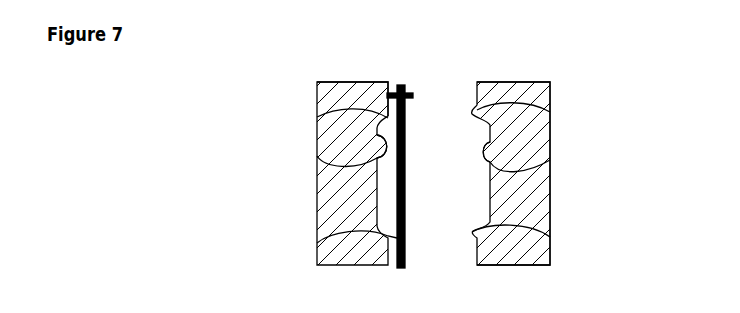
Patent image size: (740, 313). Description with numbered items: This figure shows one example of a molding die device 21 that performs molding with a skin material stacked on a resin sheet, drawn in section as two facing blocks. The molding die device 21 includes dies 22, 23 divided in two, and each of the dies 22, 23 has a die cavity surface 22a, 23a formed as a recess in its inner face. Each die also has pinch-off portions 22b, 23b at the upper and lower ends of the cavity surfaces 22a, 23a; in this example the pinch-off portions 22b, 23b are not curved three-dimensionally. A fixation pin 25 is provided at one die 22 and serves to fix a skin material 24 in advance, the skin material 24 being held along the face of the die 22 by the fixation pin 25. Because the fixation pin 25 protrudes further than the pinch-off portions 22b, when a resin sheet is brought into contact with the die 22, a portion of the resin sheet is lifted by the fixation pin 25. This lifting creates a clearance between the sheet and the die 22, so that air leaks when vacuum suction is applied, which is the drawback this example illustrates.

The molding die device 21 is at (498, 67).
The die 22 is at (330, 203).
The die cavity surface 22a is at (317, 162).
The pinch-off portion 22b is at (317, 117).
The die 23 is at (550, 200).
The die cavity surface 23a is at (550, 163).
The pinch-off portion 23b is at (550, 113).
The skin material 24 is at (405, 137).
The fixation pin 25 is at (403, 87).